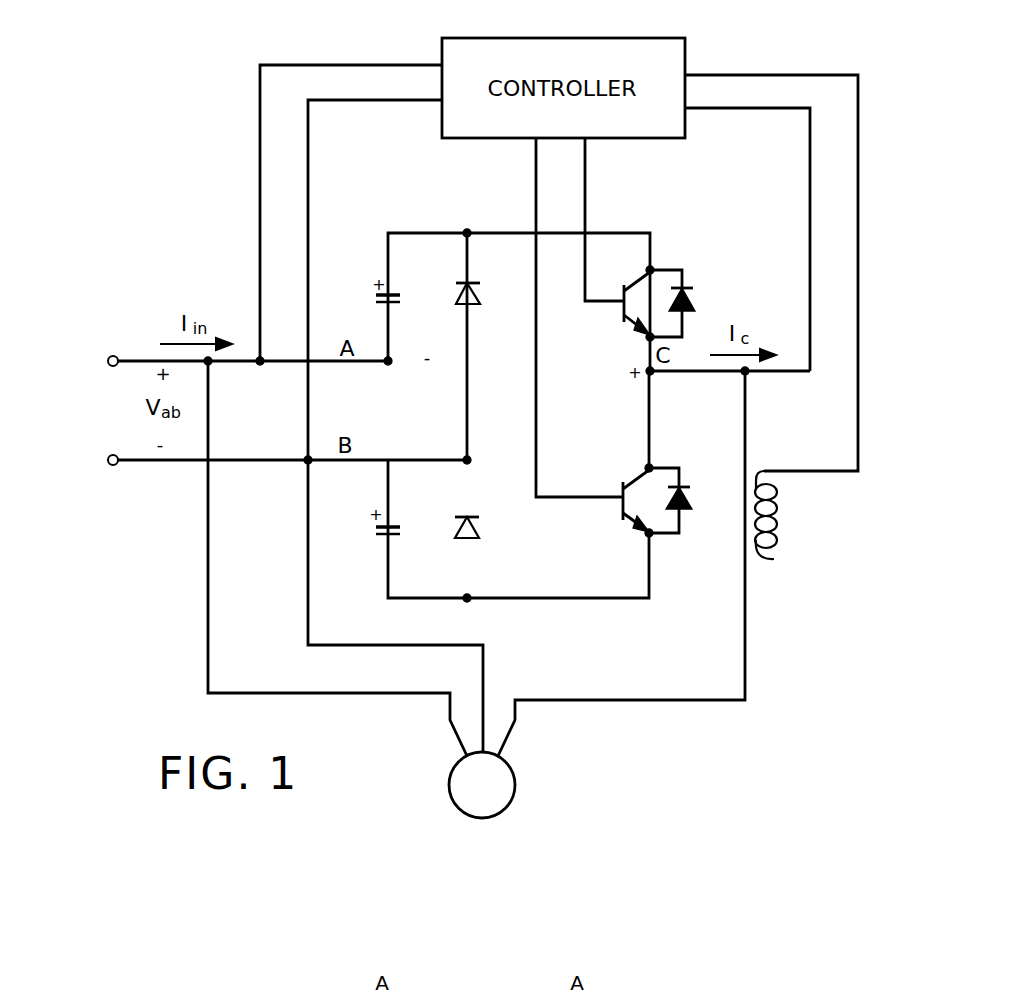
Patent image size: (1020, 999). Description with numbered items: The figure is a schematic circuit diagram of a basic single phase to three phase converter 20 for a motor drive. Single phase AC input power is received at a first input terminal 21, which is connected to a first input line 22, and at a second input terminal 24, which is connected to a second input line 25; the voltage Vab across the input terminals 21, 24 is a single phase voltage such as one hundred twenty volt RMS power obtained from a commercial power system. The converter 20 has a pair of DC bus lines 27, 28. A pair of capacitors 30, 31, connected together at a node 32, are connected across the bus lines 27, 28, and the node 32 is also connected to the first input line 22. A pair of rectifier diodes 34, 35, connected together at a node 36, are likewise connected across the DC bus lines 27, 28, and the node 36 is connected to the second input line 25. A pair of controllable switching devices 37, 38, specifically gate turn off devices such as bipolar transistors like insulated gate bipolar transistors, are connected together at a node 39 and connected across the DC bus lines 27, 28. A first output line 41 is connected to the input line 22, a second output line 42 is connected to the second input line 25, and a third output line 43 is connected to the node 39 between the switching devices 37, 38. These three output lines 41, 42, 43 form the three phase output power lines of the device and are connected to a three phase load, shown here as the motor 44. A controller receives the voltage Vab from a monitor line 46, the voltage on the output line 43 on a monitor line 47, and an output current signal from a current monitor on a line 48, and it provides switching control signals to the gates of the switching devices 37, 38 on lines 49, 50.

The single phase to three phase converter 20 is at (750, 573).
The first input terminal 21 is at (110, 367).
The first input line 22 is at (125, 357).
The second input terminal 24 is at (108, 466).
The second input line 25 is at (132, 463).
The DC bus line 27 is at (421, 232).
The DC bus line 28 is at (626, 601).
The capacitor 30 is at (392, 294).
The capacitor 31 is at (378, 538).
The node 32 is at (392, 364).
The rectifier diode 34 is at (470, 283).
The rectifier diode 35 is at (458, 539).
The node 36 is at (470, 460).
The controllable switching device 37 is at (670, 266).
The controllable switching device 38 is at (651, 537).
The node 39 is at (652, 373).
The first output line 41 is at (207, 570).
The second output line 42 is at (306, 548).
The third output line 43 is at (746, 664).
The motor 44 is at (516, 774).
The monitor line 46 is at (309, 172).
The monitor line 47 is at (778, 110).
The line 48 is at (778, 74).
The line 49 is at (586, 190).
The line 50 is at (536, 190).